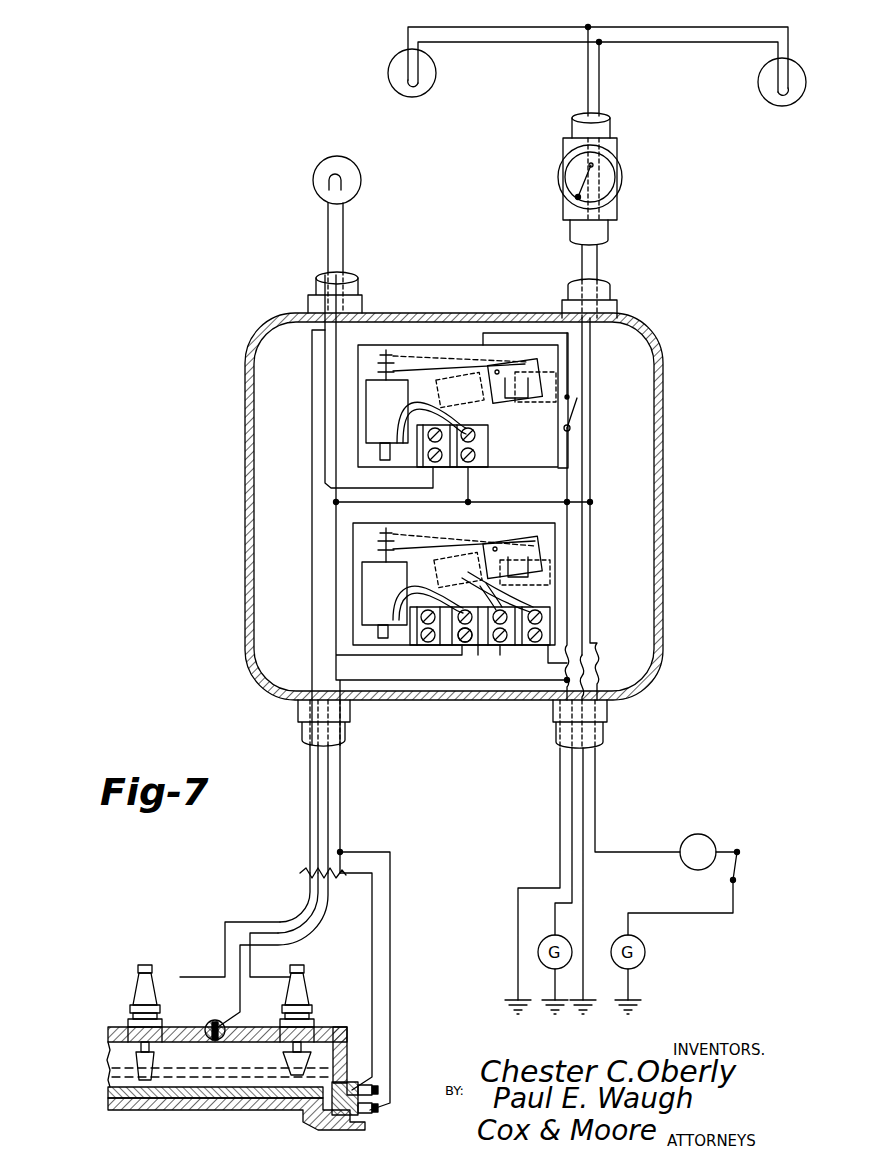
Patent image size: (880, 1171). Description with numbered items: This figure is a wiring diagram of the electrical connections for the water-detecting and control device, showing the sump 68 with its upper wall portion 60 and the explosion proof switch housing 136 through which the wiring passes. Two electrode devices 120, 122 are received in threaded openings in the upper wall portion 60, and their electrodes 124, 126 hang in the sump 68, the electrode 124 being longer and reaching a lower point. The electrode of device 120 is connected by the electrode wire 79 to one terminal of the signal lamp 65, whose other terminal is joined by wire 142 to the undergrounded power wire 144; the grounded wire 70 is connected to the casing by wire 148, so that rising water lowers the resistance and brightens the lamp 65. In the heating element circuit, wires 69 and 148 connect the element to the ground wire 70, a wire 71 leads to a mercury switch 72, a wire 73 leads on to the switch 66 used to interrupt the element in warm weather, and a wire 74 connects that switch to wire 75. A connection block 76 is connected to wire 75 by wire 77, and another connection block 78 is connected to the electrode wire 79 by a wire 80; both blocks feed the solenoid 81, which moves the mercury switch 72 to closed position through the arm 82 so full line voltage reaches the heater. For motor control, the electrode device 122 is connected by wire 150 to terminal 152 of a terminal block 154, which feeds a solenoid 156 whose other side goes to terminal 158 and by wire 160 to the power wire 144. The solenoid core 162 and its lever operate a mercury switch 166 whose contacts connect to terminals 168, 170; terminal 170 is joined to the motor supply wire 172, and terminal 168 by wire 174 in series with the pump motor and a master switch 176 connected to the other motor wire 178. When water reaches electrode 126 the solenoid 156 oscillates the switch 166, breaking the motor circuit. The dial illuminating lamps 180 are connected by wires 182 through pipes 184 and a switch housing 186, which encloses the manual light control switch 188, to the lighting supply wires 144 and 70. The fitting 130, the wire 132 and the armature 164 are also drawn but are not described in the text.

The upper wall portion 60 is at (183, 1027).
The signal lamp 65 is at (360, 172).
The switch 66 is at (570, 430).
The sump 68 is at (108, 1105).
The wire 69 is at (345, 1042).
The ground wire 70 is at (560, 818).
The wire 71 is at (372, 963).
The mercury switch 72 is at (460, 393).
The wire 73 is at (514, 333).
The wire 74 is at (584, 462).
The wire 75 is at (546, 502).
The connection block 76 is at (478, 438).
The wire 77 is at (470, 489).
The connection block 78 is at (428, 470).
The electrode wire 79 is at (312, 437).
The wire 80 is at (434, 488).
The solenoid 81 is at (387, 420).
The arm 82 is at (424, 358).
The electrode device 120 is at (137, 990).
The electrode device 122 is at (305, 990).
The electrode 124 is at (134, 1062).
The electrode 126 is at (330, 1080).
The conduit fitting 130 is at (298, 712).
The wire 132 is at (180, 975).
The explosion proof switch housing 136 is at (248, 604).
The wire 142 is at (345, 238).
The undergrounded power wire 144 is at (592, 552).
The wire 148 is at (342, 828).
The wire 150 is at (305, 920).
The terminal 152 is at (465, 645).
The terminal block 154 is at (478, 655).
The solenoid 156 is at (380, 598).
The terminal 158 is at (428, 645).
The wire 160 is at (353, 577).
The core 162 is at (378, 542).
The armature 164 is at (445, 520).
The mercury switch 166 is at (540, 548).
The terminal 168 is at (552, 612).
The terminal 170 is at (512, 600).
The wire 172 is at (500, 655).
The wire 174 is at (582, 660).
The master switch 176 is at (740, 875).
The wire 178 is at (693, 913).
The dial illuminating lamps 180 is at (432, 83).
The wires 182 is at (598, 262).
The pipes 184 is at (612, 120).
The switch housing 186 is at (622, 175).
The light control switch 188 is at (600, 196).